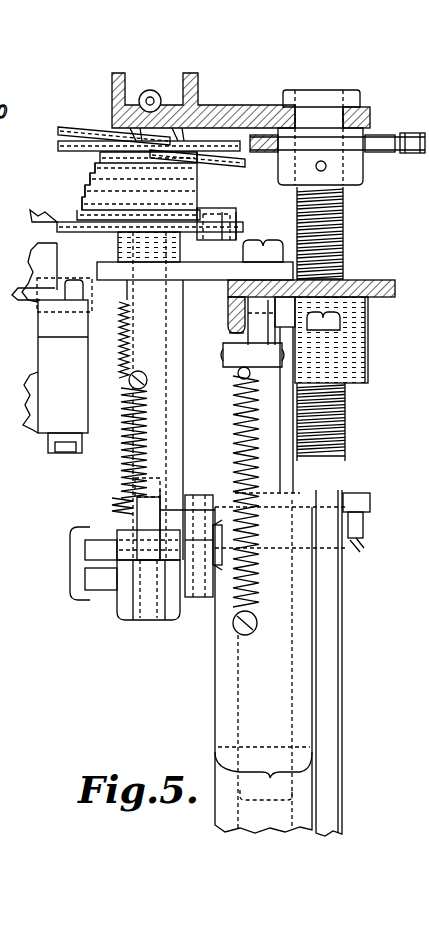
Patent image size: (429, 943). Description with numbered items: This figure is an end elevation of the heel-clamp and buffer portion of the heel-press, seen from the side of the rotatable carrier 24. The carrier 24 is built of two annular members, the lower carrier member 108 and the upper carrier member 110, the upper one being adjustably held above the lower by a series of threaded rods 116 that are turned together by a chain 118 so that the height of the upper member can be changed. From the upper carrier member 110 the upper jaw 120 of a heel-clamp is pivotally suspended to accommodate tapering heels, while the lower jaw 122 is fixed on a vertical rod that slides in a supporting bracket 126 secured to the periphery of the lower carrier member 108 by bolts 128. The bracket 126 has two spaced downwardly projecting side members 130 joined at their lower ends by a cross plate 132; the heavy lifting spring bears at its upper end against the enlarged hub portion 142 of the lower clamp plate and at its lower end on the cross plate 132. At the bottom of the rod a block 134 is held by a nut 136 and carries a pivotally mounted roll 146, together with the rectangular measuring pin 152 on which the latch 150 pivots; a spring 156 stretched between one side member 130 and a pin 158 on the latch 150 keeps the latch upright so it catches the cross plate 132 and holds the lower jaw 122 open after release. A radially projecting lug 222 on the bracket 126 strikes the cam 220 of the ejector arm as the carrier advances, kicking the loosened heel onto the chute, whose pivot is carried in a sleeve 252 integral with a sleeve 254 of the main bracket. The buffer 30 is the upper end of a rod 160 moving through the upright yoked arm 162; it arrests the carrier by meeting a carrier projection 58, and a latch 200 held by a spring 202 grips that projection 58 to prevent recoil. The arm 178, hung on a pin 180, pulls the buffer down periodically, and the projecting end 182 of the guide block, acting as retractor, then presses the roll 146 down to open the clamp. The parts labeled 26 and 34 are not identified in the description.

The upper carrier member 110 is at (236, 106).
The leaf spring stack 26 is at (82, 152).
The upper jaw 120 is at (240, 160).
The support block 34 is at (218, 216).
The lower jaw 122 is at (236, 224).
The chain 118 is at (396, 146).
The threaded rods 116 is at (346, 203).
The projections 58 is at (318, 280).
The bolts 128 is at (259, 249).
The lower carrier member 108 is at (378, 279).
The enlarged hub portion 142 is at (128, 247).
The supporting bracket 126 is at (205, 270).
The carrier 24 is at (226, 316).
The buffer 30 is at (228, 332).
The cam 220 is at (67, 289).
The radially projecting lug 222 is at (86, 284).
The sleeve 254 is at (40, 366).
The sleeve 252 is at (62, 453).
The spring 156 is at (121, 455).
The pin 158 is at (116, 496).
The latch 200 is at (239, 373).
The spring 202 is at (233, 388).
The side members 130 is at (184, 446).
The cross plate 132 is at (186, 487).
The projecting end (retractor) 182 is at (196, 514).
The rod 160 is at (268, 474).
The pin 180 is at (362, 508).
The pin (measuring pin) 152 is at (86, 556).
The latch 150 is at (128, 576).
The nut 136 is at (121, 613).
The block 134 is at (158, 622).
The roll 146 is at (198, 598).
The yoked arm 162 is at (222, 697).
The arm 178 is at (334, 733).